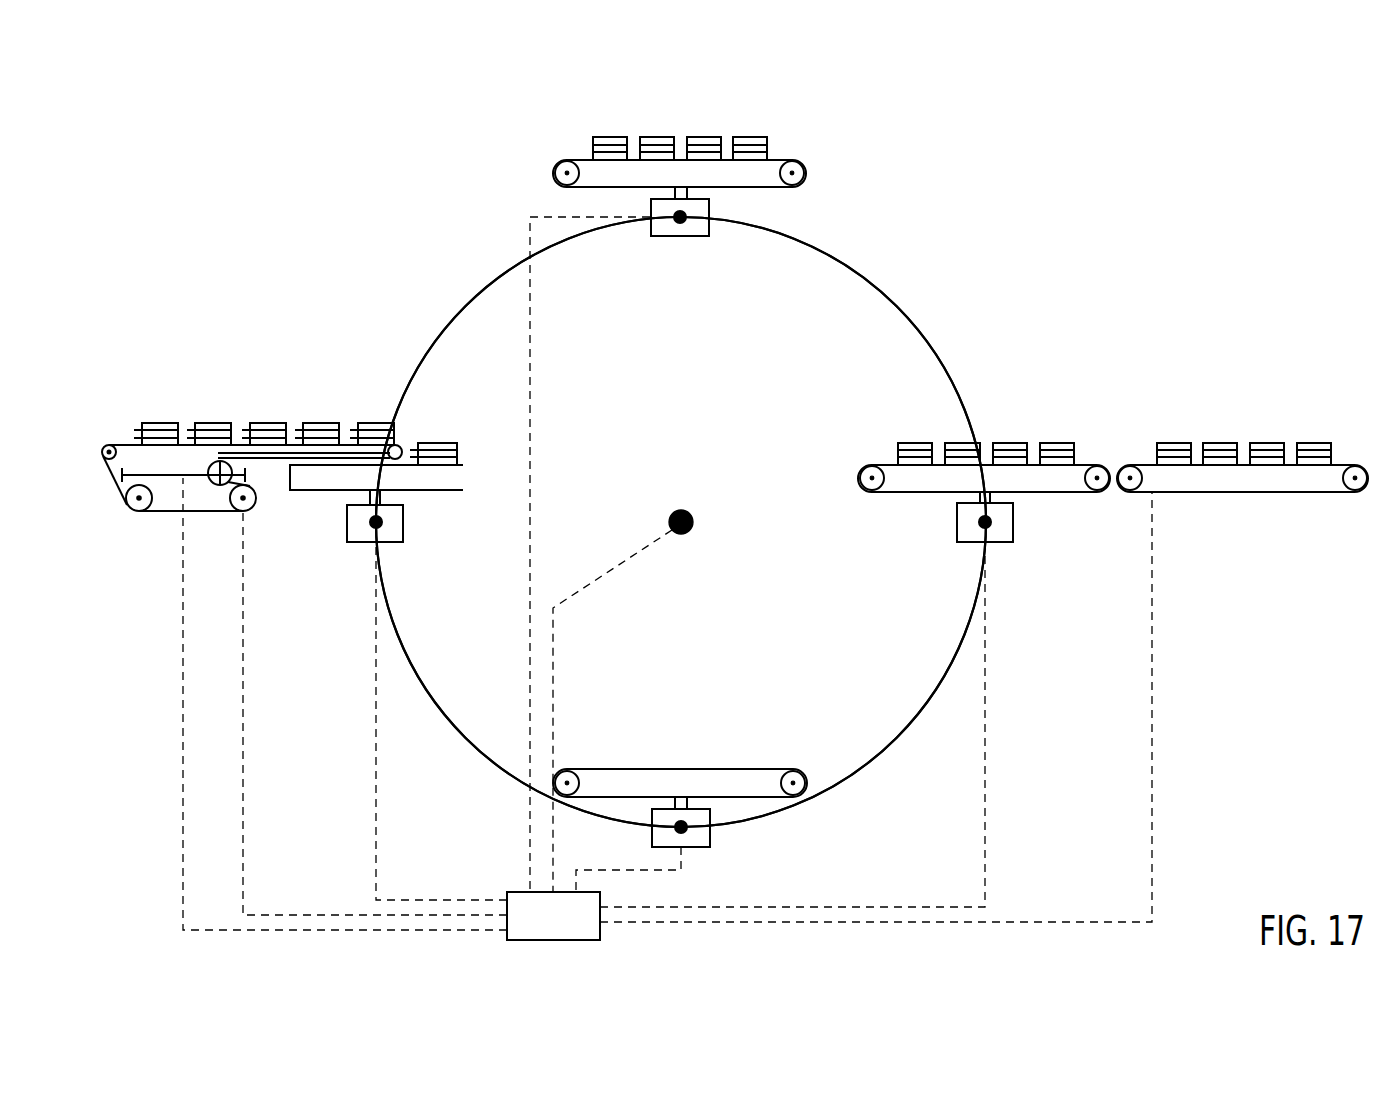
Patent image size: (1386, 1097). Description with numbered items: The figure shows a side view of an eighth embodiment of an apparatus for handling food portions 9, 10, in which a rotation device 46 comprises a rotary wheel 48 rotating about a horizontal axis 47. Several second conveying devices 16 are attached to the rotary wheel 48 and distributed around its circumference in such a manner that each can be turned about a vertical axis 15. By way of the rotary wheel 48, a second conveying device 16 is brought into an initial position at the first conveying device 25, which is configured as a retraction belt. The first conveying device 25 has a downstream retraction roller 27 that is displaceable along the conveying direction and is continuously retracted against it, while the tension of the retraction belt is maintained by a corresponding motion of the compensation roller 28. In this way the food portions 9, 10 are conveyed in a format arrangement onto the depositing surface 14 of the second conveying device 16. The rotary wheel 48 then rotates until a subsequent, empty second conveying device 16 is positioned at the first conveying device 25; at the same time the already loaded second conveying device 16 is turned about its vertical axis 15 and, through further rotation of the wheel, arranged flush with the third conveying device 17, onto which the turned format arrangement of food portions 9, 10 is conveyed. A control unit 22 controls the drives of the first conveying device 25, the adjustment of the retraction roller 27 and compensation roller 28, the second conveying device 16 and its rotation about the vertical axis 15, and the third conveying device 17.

The food portion 9 is at (604, 137).
The food portion 10 is at (650, 137).
The depositing surface 14 is at (438, 467).
The vertical axis 15 is at (688, 190).
The second conveying device 16 is at (680, 114).
The third conveying device 17 is at (1243, 417).
The control unit 22 is at (538, 931).
The first conveying device 25 is at (183, 396).
The retraction roller 27 is at (402, 442).
The compensation roller 28 is at (222, 486).
The rotation device 46 is at (868, 258).
The horizontal axis 47 is at (681, 509).
The rotary wheel 48 is at (908, 318).